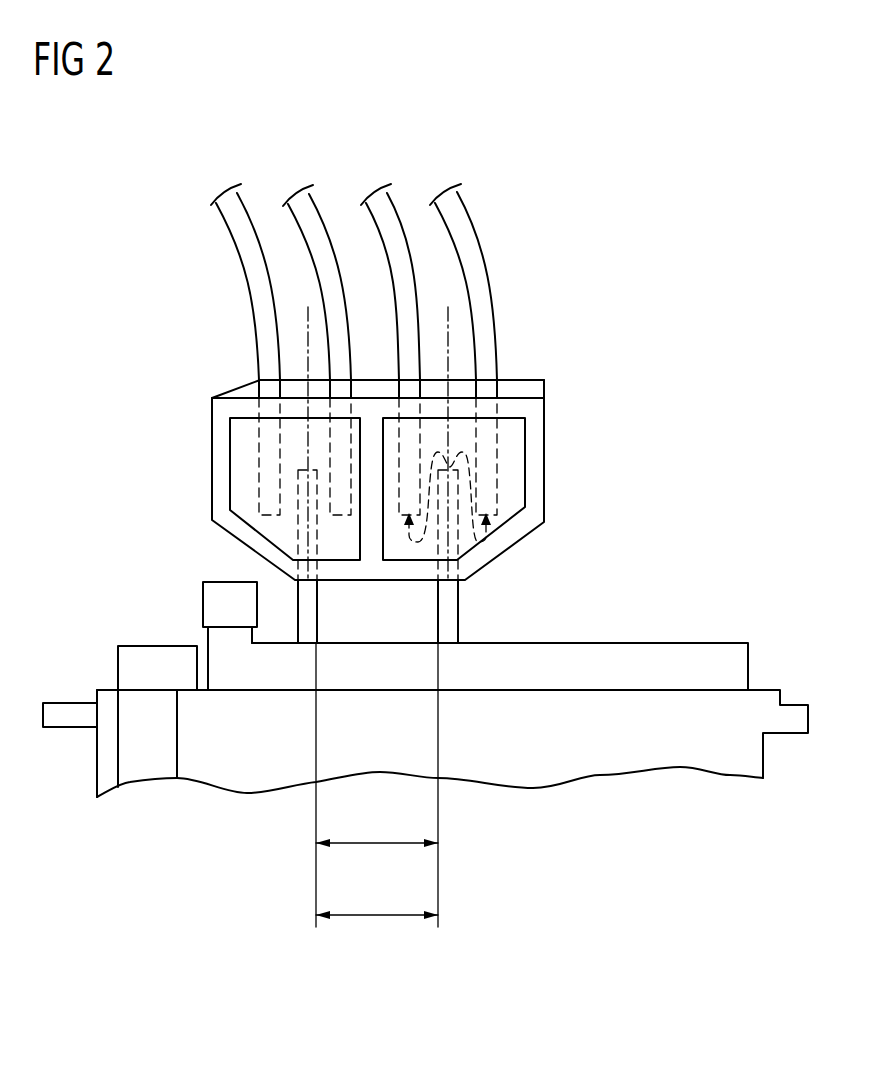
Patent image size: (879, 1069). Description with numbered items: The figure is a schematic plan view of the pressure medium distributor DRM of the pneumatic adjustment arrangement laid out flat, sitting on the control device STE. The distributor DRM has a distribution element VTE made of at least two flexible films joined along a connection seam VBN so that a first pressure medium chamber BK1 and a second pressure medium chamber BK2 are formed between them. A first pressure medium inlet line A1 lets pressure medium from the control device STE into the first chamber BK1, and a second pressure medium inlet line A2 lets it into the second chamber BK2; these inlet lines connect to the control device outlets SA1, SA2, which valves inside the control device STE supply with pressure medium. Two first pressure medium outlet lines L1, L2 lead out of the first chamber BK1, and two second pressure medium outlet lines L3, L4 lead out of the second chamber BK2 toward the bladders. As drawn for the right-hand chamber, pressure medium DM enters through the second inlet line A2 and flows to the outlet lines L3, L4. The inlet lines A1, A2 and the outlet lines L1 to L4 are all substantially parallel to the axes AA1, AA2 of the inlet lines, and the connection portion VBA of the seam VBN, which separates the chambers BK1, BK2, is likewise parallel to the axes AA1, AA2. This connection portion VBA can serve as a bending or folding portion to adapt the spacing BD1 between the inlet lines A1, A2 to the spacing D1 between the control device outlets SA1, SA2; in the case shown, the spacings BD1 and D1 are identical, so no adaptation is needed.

The first pressure medium outlet line L1 is at (265, 337).
The first pressure medium outlet line L2 is at (315, 235).
The second pressure medium outlet line L3 is at (390, 235).
The second pressure medium outlet line L4 is at (476, 305).
The axis of first pressure medium inlet line AA1 is at (308, 375).
The axis of second pressure medium inlet line AA2 is at (448, 333).
The connection portion VBA is at (372, 442).
The connection seam VBN is at (218, 447).
The distribution element VTE is at (547, 413).
The pressure medium distributor DRM is at (396, 483).
The first pressure medium chamber BK1 is at (283, 527).
The second pressure medium chamber BK2 is at (510, 507).
The first pressure medium inlet line A1 is at (305, 605).
The second pressure medium inlet line A2 is at (450, 600).
The pressure medium outlet SA1 is at (297, 640).
The pressure medium outlet SA2 is at (457, 641).
The pressure medium DM is at (452, 465).
The spacing between pressure medium inlet lines BD1 is at (377, 785).
The spacing between control device outlets D1 is at (377, 901).
The control device STE is at (637, 745).